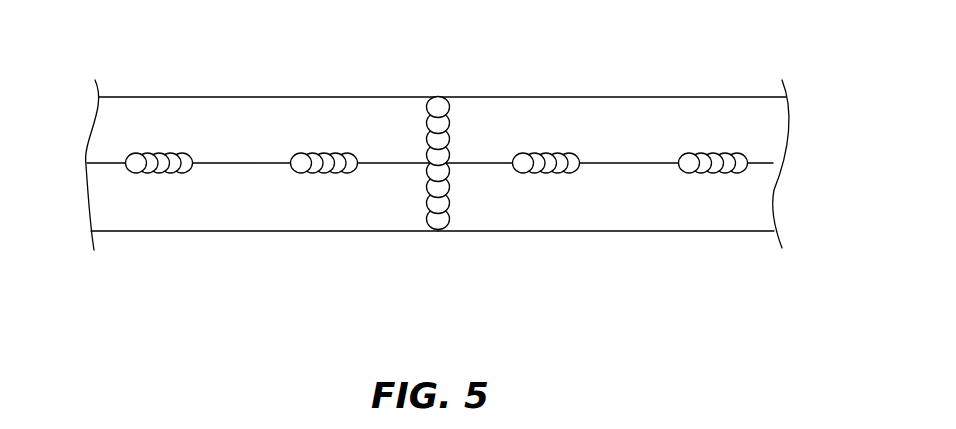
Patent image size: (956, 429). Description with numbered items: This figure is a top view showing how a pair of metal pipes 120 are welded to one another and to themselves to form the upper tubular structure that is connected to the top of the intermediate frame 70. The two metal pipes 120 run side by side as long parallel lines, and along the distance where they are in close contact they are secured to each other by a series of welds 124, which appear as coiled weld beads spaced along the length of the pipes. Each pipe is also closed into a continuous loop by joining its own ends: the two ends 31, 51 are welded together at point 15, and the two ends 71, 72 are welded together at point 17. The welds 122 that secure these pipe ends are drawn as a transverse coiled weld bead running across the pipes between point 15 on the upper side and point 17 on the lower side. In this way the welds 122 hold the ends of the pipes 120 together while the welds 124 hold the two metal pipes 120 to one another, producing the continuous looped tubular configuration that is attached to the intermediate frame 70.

The intermediate frame 70 is at (144, 253).
The metal pipes 120 is at (249, 115).
The welds 124 is at (156, 154).
The welds 122 is at (451, 133).
The end 31 is at (394, 115).
The end 51 is at (541, 115).
The end 71 is at (397, 217).
The end 72 is at (508, 207).
The point 15 is at (439, 82).
The point 17 is at (436, 252).